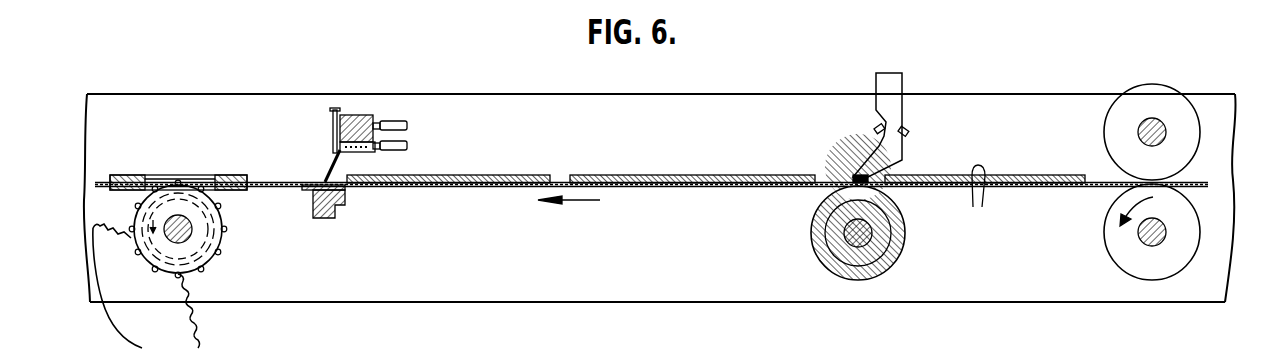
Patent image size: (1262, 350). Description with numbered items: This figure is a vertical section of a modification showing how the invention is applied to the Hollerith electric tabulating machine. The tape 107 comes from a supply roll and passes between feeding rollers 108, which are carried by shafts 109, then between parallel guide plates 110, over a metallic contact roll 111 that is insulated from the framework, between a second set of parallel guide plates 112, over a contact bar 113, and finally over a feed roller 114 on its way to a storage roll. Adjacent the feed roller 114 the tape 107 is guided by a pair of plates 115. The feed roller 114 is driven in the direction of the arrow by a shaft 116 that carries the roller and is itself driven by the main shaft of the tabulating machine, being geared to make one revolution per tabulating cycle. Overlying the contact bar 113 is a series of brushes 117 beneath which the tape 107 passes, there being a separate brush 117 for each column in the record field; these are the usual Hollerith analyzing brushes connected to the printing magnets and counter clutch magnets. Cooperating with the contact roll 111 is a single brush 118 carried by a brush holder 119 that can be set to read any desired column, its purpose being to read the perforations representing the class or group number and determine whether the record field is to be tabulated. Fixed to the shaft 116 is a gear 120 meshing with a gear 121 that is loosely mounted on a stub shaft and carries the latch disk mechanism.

The tape 107 is at (270, 183).
The feeding rollers 108 is at (1185, 210).
The shafts 109 is at (1160, 130).
The parallel guide plates 110 is at (983, 198).
The metallic contact roll 111 is at (905, 252).
The parallel guide plates 112 is at (482, 182).
The contact bar 113 is at (335, 208).
The feed roller 114 is at (182, 207).
The pair of plates 115 is at (120, 180).
The shaft 116 is at (192, 229).
The brushes 117 is at (325, 177).
The single brush 118 is at (855, 178).
The brush holder 119 is at (890, 102).
The gear 120 is at (200, 248).
The gear 121 is at (183, 345).